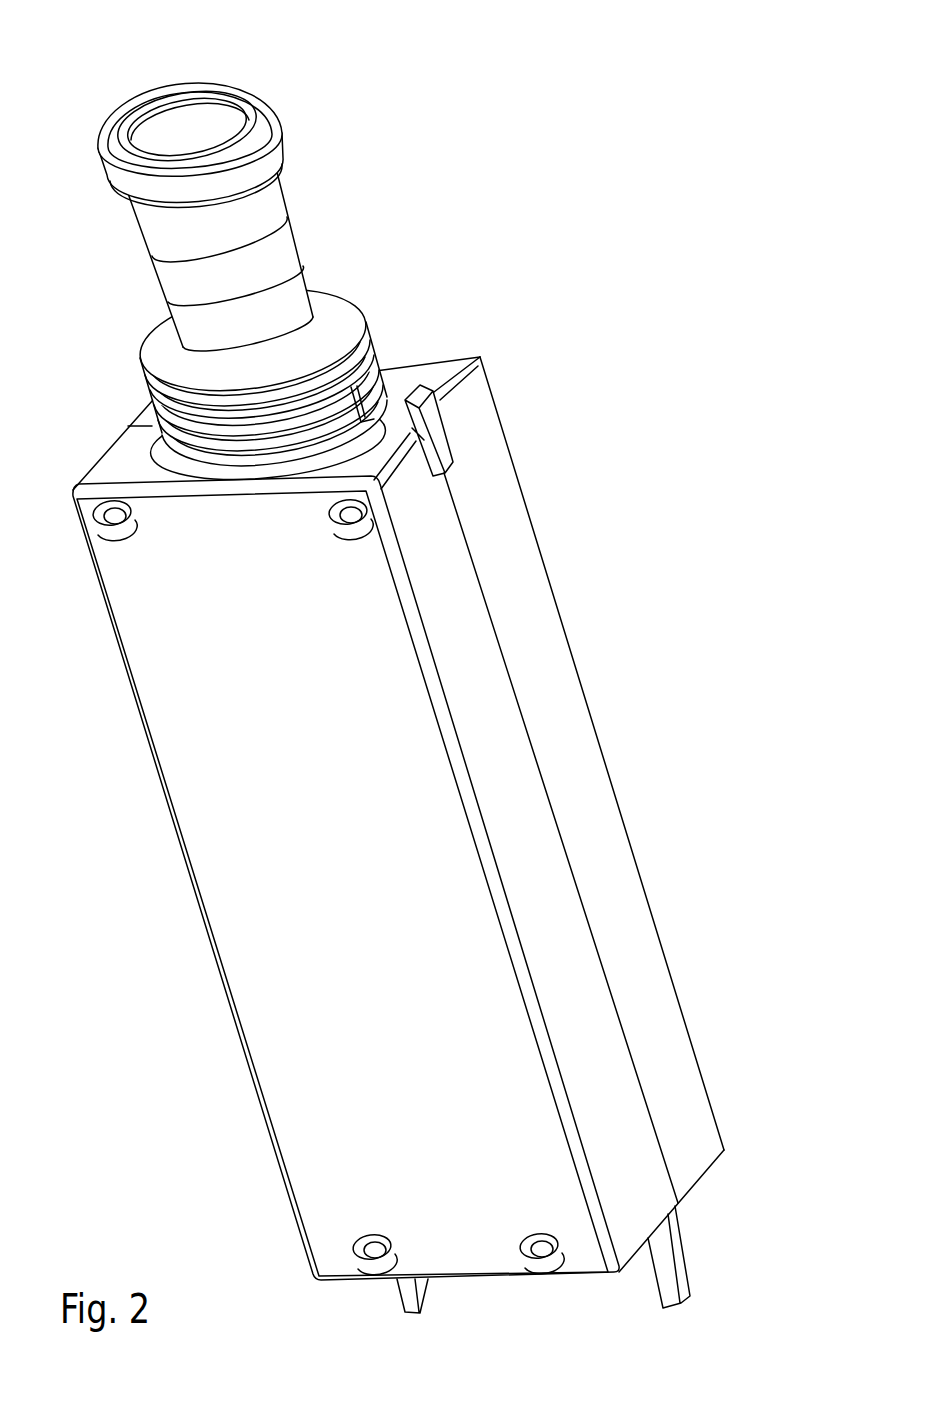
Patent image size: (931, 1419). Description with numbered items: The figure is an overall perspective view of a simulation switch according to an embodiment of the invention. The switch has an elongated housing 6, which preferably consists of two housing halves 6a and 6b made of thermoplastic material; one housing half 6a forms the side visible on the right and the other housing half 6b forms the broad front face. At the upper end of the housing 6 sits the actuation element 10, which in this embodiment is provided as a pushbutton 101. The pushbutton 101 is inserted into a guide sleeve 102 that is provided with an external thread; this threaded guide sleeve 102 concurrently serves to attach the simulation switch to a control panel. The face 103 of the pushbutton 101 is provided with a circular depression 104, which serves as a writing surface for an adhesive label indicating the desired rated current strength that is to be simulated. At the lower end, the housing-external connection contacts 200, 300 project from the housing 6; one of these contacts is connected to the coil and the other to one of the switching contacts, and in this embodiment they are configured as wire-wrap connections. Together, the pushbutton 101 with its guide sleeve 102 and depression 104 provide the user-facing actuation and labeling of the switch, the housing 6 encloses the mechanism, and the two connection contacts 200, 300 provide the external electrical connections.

The actuation element 10 is at (261, 253).
The housing 6 is at (398, 818).
The housing half 6a is at (557, 707).
The housing half 6b is at (215, 795).
The pushbutton 101 is at (273, 190).
The guide sleeve 102 is at (362, 343).
The face 103 is at (246, 106).
The circular depression 104 is at (185, 128).
The connection contact 200 is at (437, 1294).
The connection contact 300 is at (663, 1277).